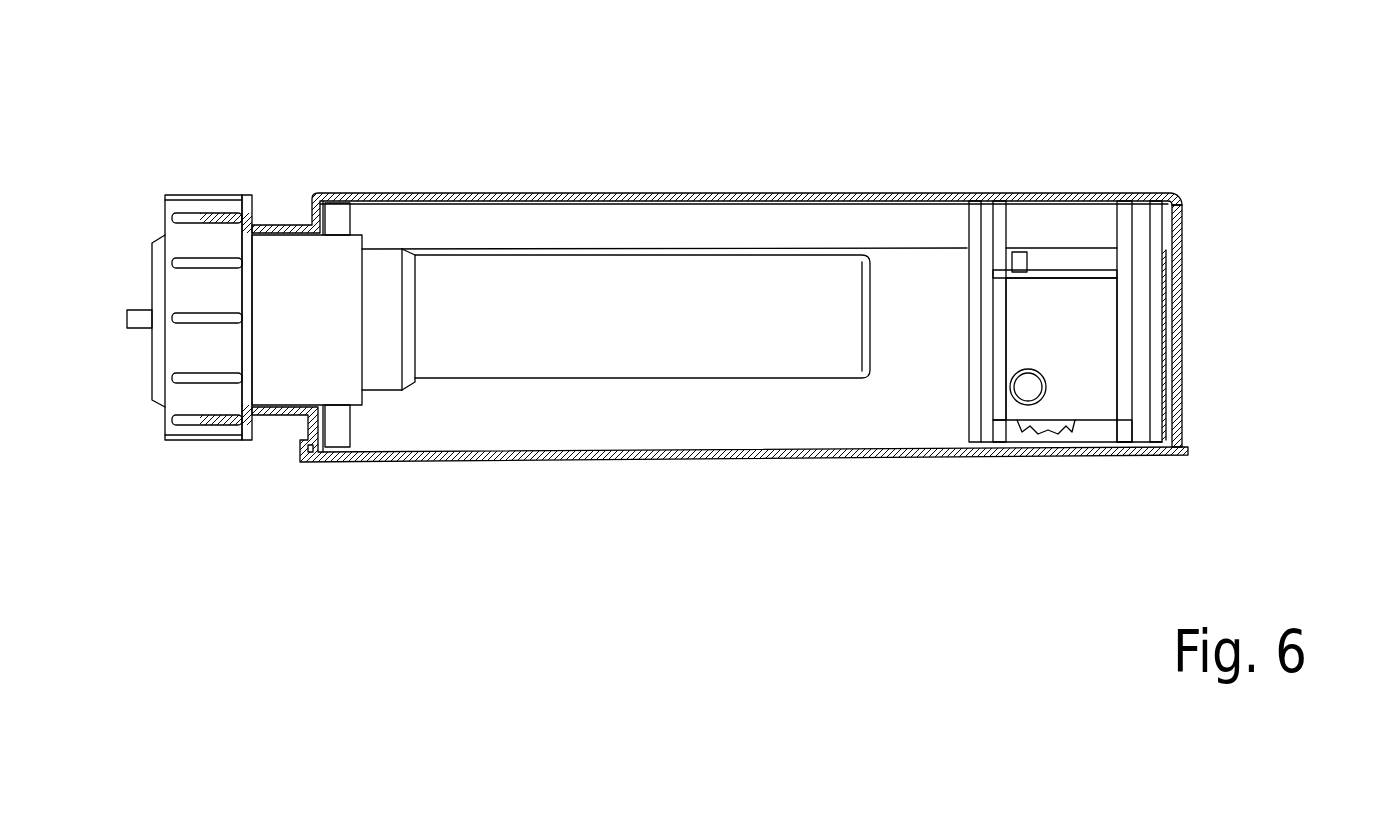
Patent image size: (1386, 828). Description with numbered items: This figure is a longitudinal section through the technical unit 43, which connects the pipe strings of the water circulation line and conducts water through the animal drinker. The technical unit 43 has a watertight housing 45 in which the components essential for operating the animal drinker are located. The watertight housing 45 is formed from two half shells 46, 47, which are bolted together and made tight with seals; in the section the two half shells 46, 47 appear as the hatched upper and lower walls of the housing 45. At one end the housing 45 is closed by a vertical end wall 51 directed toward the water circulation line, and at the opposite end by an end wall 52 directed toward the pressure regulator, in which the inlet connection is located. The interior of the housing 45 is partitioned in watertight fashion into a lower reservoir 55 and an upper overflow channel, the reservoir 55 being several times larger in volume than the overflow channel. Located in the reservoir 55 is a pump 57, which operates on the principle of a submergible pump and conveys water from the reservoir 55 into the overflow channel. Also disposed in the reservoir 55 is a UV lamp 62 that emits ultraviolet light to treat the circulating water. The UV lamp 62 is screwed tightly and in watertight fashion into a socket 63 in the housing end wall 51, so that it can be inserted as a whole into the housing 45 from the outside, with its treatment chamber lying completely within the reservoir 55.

The technical unit 43 is at (1108, 127).
The watertight housing 45 is at (665, 193).
The half shell 46 is at (722, 458).
The half shell 47 is at (945, 193).
The end wall 51 is at (303, 427).
The end wall 52 is at (1180, 345).
The reservoir 55 is at (1025, 321).
The pump 57 is at (1100, 330).
The UV lamp 62 is at (573, 350).
The socket 63 is at (280, 275).